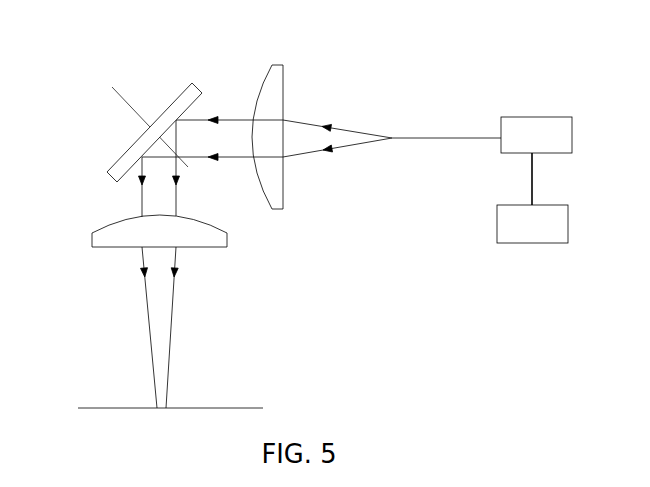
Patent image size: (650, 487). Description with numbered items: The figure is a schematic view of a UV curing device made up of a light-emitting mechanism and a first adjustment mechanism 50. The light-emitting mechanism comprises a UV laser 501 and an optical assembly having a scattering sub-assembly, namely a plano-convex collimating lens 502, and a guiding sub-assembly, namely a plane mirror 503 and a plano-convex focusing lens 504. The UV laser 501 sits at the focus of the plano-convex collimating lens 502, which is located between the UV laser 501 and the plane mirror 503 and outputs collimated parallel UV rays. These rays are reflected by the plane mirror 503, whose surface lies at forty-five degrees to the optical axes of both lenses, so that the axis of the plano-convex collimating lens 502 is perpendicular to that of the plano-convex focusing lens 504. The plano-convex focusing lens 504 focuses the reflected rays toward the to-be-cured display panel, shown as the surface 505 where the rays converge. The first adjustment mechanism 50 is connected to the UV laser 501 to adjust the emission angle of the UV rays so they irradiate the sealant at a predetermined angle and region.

The first adjustment mechanism 50 is at (540, 232).
The UV laser 501 is at (543, 117).
The plano-convex collimating lens 502 is at (282, 78).
The plane mirror 503 is at (182, 93).
The plano-convex focusing lens 504 is at (98, 245).
The target surface 505 is at (235, 408).